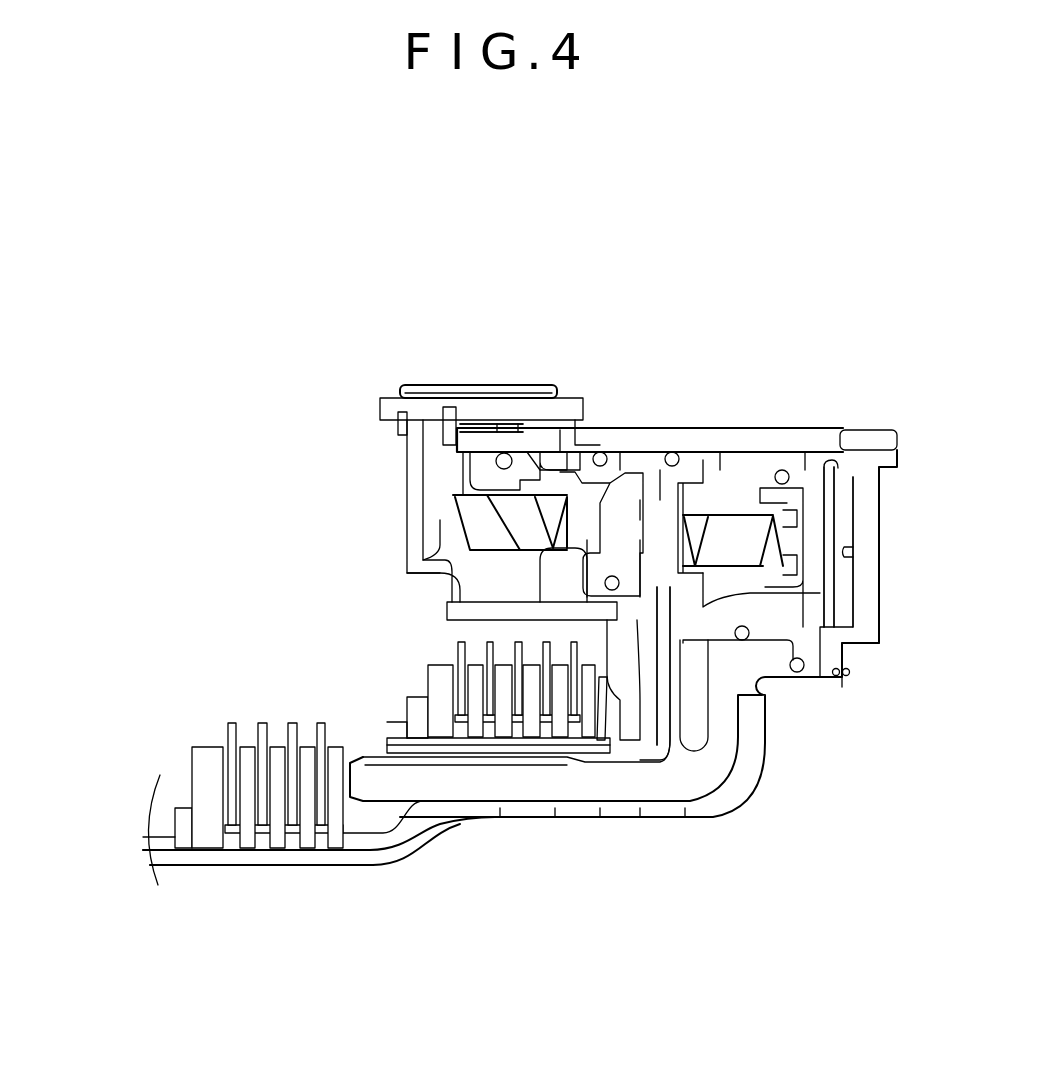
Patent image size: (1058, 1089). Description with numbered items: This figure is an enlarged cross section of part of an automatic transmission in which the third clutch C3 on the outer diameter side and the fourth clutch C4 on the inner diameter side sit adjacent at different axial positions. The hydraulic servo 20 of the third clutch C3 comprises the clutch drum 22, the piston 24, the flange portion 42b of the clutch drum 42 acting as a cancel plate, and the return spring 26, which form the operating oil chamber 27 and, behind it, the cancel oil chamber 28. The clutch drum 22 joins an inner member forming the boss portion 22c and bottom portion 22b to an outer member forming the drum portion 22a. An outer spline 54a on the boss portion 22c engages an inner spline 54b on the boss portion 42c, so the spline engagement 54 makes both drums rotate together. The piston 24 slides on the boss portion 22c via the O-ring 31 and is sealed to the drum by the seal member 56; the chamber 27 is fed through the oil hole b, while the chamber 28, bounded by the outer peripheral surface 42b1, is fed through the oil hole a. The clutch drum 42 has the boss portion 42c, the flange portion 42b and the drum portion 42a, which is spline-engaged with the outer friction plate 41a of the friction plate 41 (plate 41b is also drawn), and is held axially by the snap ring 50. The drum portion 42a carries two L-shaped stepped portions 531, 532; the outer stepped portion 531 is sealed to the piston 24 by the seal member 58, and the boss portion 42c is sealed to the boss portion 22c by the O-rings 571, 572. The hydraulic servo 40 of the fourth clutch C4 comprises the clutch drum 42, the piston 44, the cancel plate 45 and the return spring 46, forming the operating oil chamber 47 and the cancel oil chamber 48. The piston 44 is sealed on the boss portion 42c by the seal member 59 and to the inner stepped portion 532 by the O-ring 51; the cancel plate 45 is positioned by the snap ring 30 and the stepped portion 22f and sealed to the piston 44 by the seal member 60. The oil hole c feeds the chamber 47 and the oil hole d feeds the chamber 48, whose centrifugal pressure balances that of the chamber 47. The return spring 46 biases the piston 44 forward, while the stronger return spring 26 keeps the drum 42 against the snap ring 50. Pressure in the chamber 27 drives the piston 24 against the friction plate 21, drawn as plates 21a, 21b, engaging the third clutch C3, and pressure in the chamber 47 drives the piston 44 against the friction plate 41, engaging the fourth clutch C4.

The hydraulic servo 20 is at (846, 516).
The friction plate 21 is at (254, 733).
The friction plate 21a is at (274, 668).
The separator plate 21b is at (233, 740).
The clutch drum 22 is at (748, 780).
The drum portion 22a is at (262, 856).
The bottom portion 22b is at (865, 615).
The boss portion 22c is at (422, 403).
The stepped portion 22f is at (587, 418).
The piston 24 is at (720, 750).
The return spring 26 is at (740, 512).
The operating oil chamber 27 is at (852, 555).
The cancel oil chamber 28 is at (676, 478).
The snap ring 30 is at (378, 403).
The O-ring 31 is at (786, 469).
The hydraulic servo 40 is at (628, 445).
The friction plate 41 is at (457, 665).
The outer friction plate 41a is at (445, 670).
The separator plate 41b is at (462, 645).
The clutch drum 42 is at (865, 597).
The drum portion 42a is at (478, 750).
The flange portion 42b is at (863, 529).
The outer peripheral surface 42b1 is at (710, 495).
The boss portion 42c is at (537, 418).
The piston 44 is at (634, 704).
The cancel plate 45 is at (417, 465).
The return spring 46 is at (455, 520).
The operating oil chamber 47 is at (655, 455).
The cancel oil chamber 48 is at (452, 482).
The snap ring 50 is at (438, 408).
The O-ring 51 is at (611, 590).
The outer stepped portion 531 is at (690, 646).
The inner stepped portion 532 is at (655, 718).
The spline engagement 54 is at (427, 270).
The outer spline 54a is at (503, 418).
The inner spline 54b is at (523, 418).
The seal member 56 is at (852, 674).
The O-ring 571 is at (673, 452).
The O-ring 572 is at (601, 452).
The seal member 58 is at (850, 645).
The seal member 59 is at (451, 417).
The seal member 60 is at (423, 578).
The third clutch C3 is at (128, 812).
The fourth clutch C4 is at (396, 694).
The oil hole a is at (728, 450).
The oil hole b is at (826, 472).
The oil hole c is at (626, 516).
The oil hole d is at (557, 406).